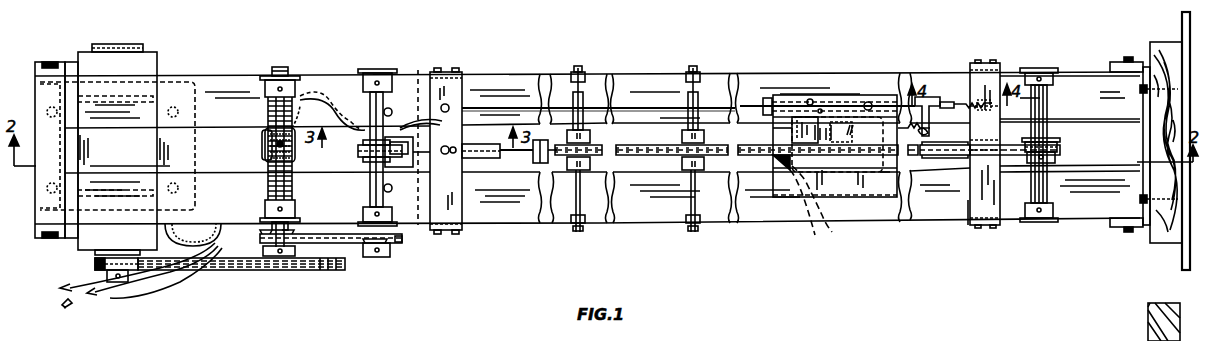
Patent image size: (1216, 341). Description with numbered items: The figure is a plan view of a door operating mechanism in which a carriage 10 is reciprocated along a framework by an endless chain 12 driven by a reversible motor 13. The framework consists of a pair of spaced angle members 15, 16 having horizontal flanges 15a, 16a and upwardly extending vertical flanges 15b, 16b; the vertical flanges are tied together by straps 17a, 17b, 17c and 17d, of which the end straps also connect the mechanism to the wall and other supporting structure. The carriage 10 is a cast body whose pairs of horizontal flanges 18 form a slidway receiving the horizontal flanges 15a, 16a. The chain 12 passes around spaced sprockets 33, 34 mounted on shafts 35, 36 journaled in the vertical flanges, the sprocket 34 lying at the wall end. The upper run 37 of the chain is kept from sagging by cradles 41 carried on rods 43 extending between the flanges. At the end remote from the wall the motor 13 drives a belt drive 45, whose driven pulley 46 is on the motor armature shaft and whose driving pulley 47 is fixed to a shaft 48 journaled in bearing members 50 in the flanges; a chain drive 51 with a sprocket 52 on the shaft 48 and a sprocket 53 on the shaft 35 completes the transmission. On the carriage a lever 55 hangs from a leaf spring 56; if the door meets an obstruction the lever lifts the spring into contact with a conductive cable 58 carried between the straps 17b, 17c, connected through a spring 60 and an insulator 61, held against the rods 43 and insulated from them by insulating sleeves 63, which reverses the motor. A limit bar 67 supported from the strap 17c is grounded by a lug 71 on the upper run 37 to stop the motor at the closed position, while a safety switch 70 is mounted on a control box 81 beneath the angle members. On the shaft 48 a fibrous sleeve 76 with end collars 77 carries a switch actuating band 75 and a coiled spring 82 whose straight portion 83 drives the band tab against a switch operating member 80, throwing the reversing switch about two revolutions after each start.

The carriage 10 is at (882, 196).
The chain 12 is at (935, 161).
The motor 13 is at (163, 90).
The angle member 15 is at (1082, 80).
The horizontal flange 15a is at (1076, 122).
The vertical flange 15b is at (1001, 80).
The angle member 16 is at (1070, 210).
The horizontal flange 16a is at (1117, 176).
The vertical flange 16b is at (1001, 226).
The strap 17a is at (1137, 226).
The strap 17b is at (966, 205).
The strap 17c is at (450, 232).
The strap 17d is at (60, 240).
The horizontal flanges 18 is at (838, 190).
The sprocket 33 is at (360, 155).
The sprocket 34 is at (1057, 149).
The shaft 35 is at (368, 88).
The shaft 36 is at (1045, 105).
The upper run 37 is at (807, 141).
The cradles 41 is at (682, 138).
The rods 43 is at (578, 212).
The belt drive 45 is at (200, 273).
The driven pulley 46 is at (95, 264).
The driving pulley 47 is at (281, 273).
The shaft 48 is at (290, 233).
The bearing members 50 is at (274, 80).
The chain drive 51 is at (375, 251).
The sprocket 52 is at (262, 239).
The sprocket 53 is at (402, 244).
The lever 55 is at (792, 137).
The leaf spring 56 is at (770, 104).
The cable 58 is at (637, 108).
The spring 60 is at (962, 104).
The insulator 61 is at (940, 106).
The insulating sleeves 63 is at (583, 100).
The limit bar 67 is at (483, 145).
The safety switch 70 is at (405, 165).
The lug 71 is at (542, 145).
The switch actuating band 75 is at (290, 154).
The sleeve 76 is at (287, 174).
The collars 77 is at (282, 100).
The switch operating member 80 is at (292, 121).
The control box 81 is at (420, 70).
The spring 82 is at (288, 110).
The straight portion 83 is at (263, 143).